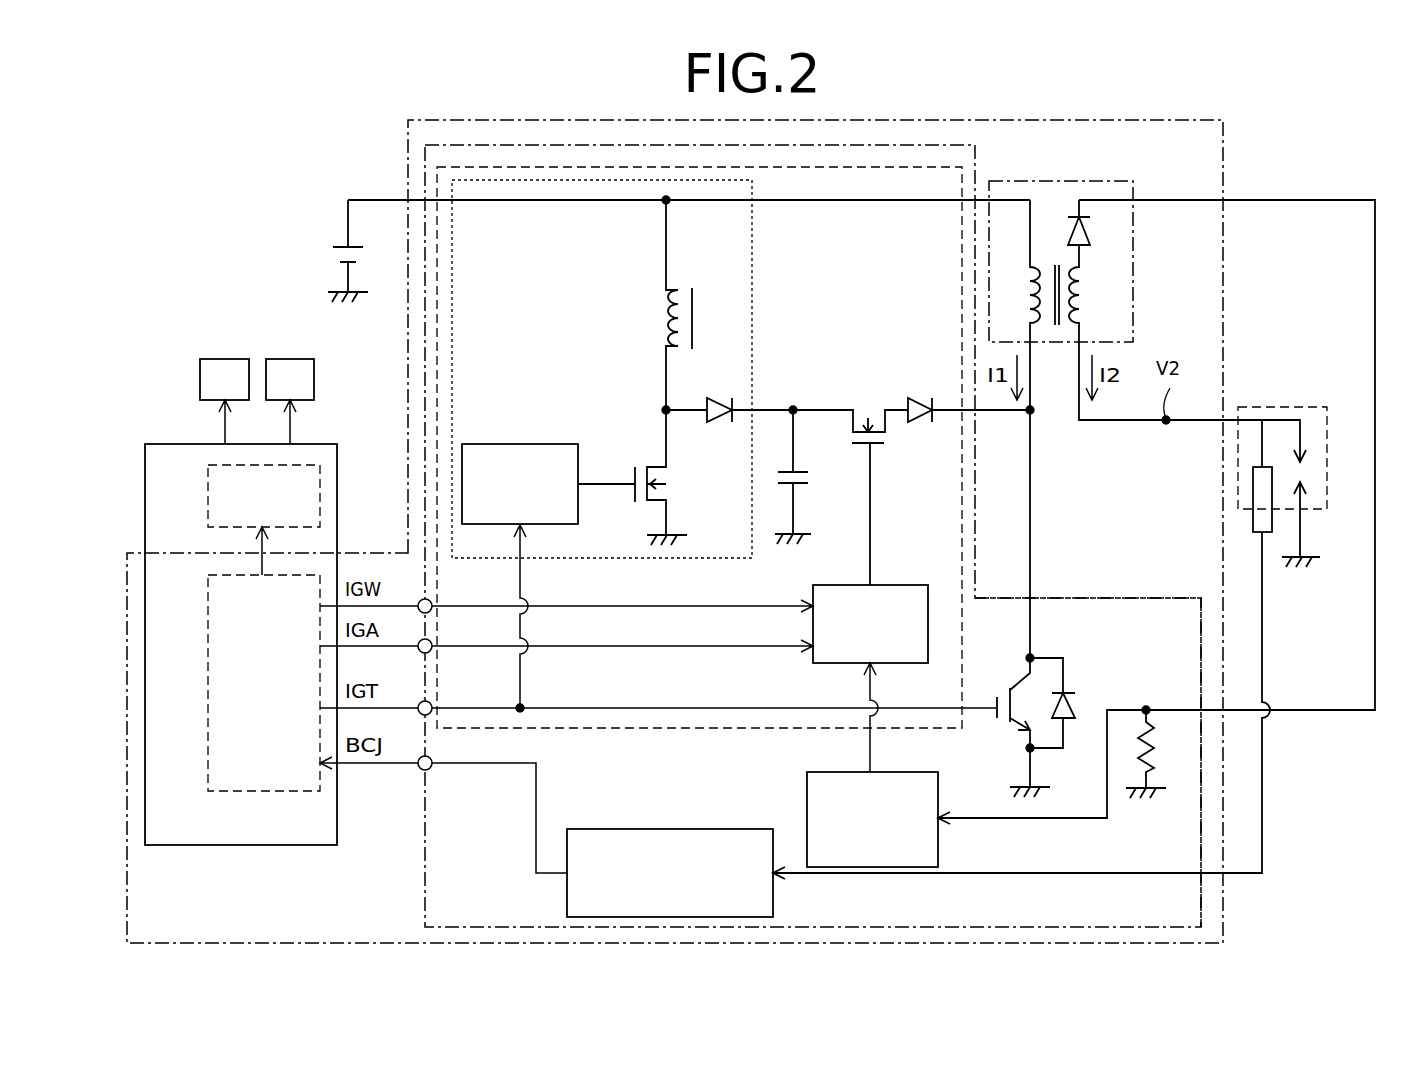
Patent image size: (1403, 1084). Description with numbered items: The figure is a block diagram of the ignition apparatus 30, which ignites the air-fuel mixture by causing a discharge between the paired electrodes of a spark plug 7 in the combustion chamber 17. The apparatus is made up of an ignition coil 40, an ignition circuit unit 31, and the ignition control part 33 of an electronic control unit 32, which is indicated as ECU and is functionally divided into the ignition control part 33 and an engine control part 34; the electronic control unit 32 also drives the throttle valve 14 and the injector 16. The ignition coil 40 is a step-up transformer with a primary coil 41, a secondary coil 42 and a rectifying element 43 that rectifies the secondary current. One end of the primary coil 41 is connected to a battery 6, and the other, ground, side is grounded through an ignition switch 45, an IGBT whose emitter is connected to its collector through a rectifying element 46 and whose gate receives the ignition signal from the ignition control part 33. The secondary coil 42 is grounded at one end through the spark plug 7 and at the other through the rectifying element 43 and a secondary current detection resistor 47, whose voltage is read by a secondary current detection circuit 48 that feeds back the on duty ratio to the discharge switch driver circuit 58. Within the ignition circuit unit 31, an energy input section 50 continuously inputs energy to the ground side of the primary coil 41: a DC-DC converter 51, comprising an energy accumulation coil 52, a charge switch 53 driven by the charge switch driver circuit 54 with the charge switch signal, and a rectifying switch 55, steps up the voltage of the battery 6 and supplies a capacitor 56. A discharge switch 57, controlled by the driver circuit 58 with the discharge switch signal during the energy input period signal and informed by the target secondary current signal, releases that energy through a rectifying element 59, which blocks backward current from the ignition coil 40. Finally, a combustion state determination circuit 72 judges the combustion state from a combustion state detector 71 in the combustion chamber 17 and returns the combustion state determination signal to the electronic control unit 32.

The battery 6 is at (355, 247).
The spark plug 7 is at (1305, 472).
The throttle valve 14 is at (227, 358).
The injector 16 is at (287, 358).
The combustion chamber 17 is at (1307, 407).
The ignition apparatus 30 is at (1228, 143).
The ignition circuit unit 31 is at (1147, 597).
The electronic control unit 32 is at (250, 848).
The ignition control part 33 is at (208, 675).
The engine control part 34 is at (208, 497).
The ignition coil 40 is at (1077, 278).
The primary coil 41 is at (1030, 290).
The secondary coil 42 is at (1080, 290).
The rectifying element 43 is at (1090, 232).
The ignition switch 45 is at (1020, 685).
The rectifying element 46 is at (1065, 692).
The secondary current detection resistor 47 is at (1158, 750).
The secondary current detection circuit 48 is at (900, 771).
The energy input section 50 is at (622, 728).
The DC-DC converter 51 is at (752, 254).
The energy accumulation coil 52 is at (678, 290).
The charge switch 53 is at (660, 466).
The charge switch driver circuit 54 is at (493, 443).
The rectifying switch 55 is at (720, 398).
The capacitor 56 is at (800, 487).
The discharge switch 57 is at (885, 423).
The discharge switch driver circuit 58 is at (890, 583).
The rectifying element 59 is at (922, 398).
The combustion state detector 71 is at (1257, 467).
The combustion state determination circuit 72 is at (705, 828).